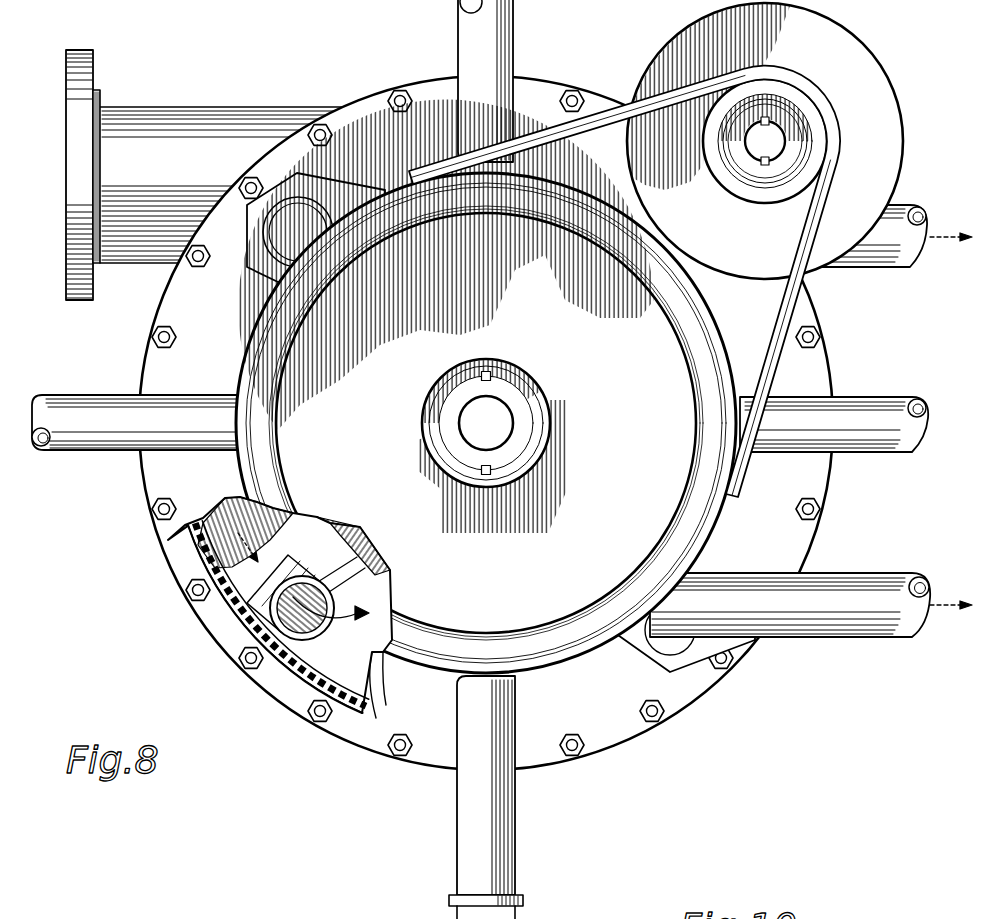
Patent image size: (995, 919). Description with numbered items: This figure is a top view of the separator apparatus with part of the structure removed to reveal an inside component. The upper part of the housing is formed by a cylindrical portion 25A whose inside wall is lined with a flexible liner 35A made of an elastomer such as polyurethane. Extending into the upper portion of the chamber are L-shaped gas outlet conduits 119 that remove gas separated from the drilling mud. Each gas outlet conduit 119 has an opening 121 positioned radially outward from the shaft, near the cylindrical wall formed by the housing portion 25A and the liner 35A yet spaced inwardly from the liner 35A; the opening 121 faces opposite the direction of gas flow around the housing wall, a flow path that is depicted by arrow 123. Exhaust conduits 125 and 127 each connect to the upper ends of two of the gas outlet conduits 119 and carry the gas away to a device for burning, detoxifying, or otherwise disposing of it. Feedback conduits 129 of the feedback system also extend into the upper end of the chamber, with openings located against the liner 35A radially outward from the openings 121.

The feedback conduit 129 is at (457, 30).
The exhaust conduit 127 is at (886, 268).
The exhaust conduit 125 is at (868, 573).
The arrow 123 is at (198, 572).
The opening 121 is at (203, 617).
The gas outlet conduit 119 is at (234, 628).
The cylindrical portion 25A is at (278, 640).
The flexible liner 35A is at (306, 690).